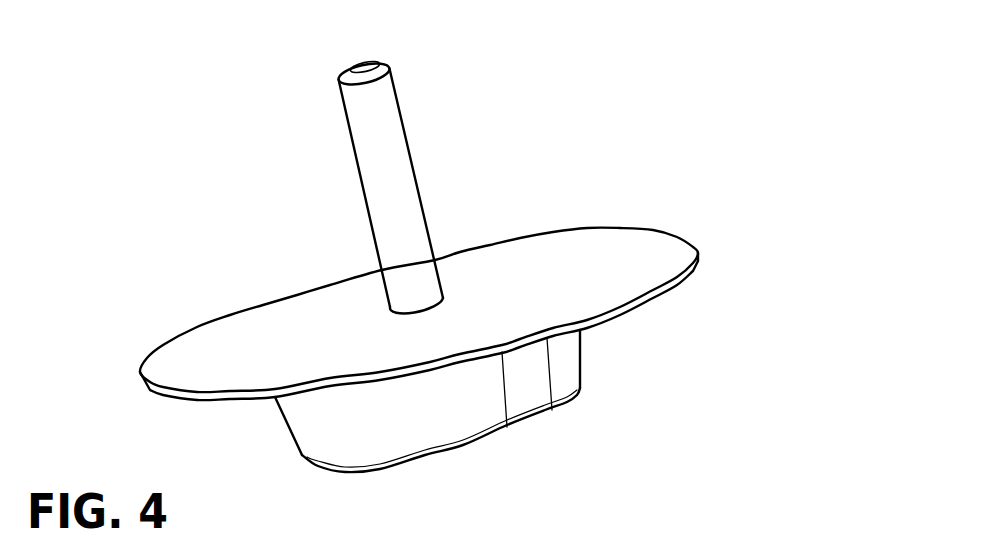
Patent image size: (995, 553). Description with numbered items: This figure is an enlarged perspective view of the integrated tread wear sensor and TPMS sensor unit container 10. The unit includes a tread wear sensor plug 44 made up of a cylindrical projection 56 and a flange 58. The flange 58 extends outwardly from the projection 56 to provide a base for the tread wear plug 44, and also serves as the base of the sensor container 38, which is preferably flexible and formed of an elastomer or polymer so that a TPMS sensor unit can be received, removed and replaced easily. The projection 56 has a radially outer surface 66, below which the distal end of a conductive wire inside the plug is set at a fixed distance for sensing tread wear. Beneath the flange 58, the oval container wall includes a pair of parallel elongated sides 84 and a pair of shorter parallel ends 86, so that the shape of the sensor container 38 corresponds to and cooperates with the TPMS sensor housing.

The integrated tread wear sensor and TPMS sensor unit container 10 is at (570, 82).
The sensor container 38 is at (460, 433).
The tread wear sensor plug 44 is at (425, 161).
The cylindrical projection 56 is at (397, 193).
The flange 58 is at (603, 227).
The radially outer surface 66 is at (358, 68).
The elongated sides 84 is at (447, 420).
The ends 86 is at (302, 455).